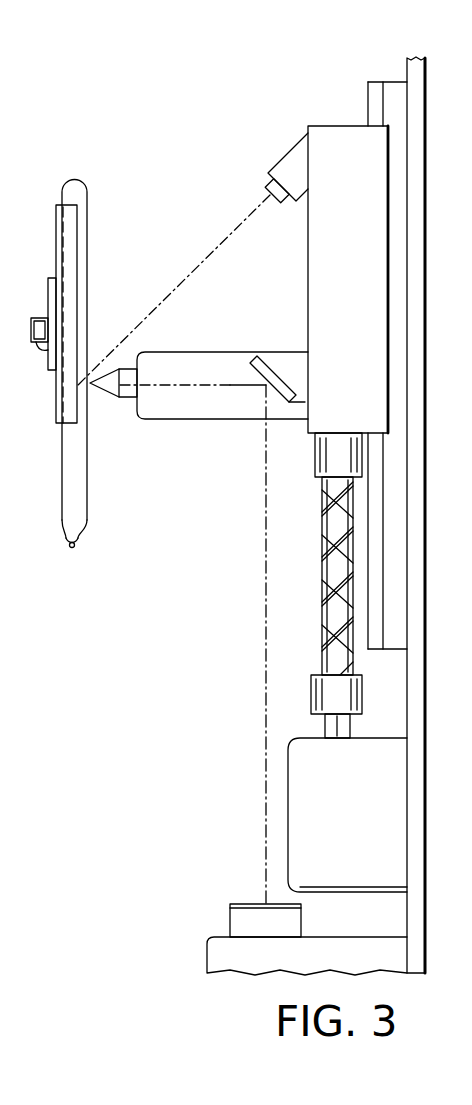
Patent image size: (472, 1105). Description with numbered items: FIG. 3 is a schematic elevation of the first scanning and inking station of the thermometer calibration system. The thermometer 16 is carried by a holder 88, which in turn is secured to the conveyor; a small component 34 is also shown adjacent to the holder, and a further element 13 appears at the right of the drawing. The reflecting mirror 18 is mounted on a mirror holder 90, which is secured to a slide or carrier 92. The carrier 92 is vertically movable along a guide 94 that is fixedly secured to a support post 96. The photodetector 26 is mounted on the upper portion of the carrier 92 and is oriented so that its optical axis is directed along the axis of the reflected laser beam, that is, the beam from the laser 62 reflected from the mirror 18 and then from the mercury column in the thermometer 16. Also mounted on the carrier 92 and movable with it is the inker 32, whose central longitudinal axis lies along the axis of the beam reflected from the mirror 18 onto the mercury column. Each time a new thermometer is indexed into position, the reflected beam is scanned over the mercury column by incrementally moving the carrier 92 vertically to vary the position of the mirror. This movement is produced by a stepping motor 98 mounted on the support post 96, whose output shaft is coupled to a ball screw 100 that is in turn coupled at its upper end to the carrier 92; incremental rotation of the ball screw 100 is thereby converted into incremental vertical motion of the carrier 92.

The housing 13 is at (465, 353).
The thermometer 16 is at (77, 469).
The reflecting mirror 18 is at (280, 402).
The photodetector 26 is at (282, 163).
The inker 32 is at (190, 363).
The sensor 34 is at (41, 332).
The laser 62 is at (236, 928).
The holder 88 is at (58, 412).
The mirror holder 90 is at (284, 365).
The carrier 92 is at (330, 137).
The guide 94 is at (393, 88).
The support post 96 is at (423, 263).
The stepping motor 98 is at (300, 802).
The ball screw 100 is at (333, 580).